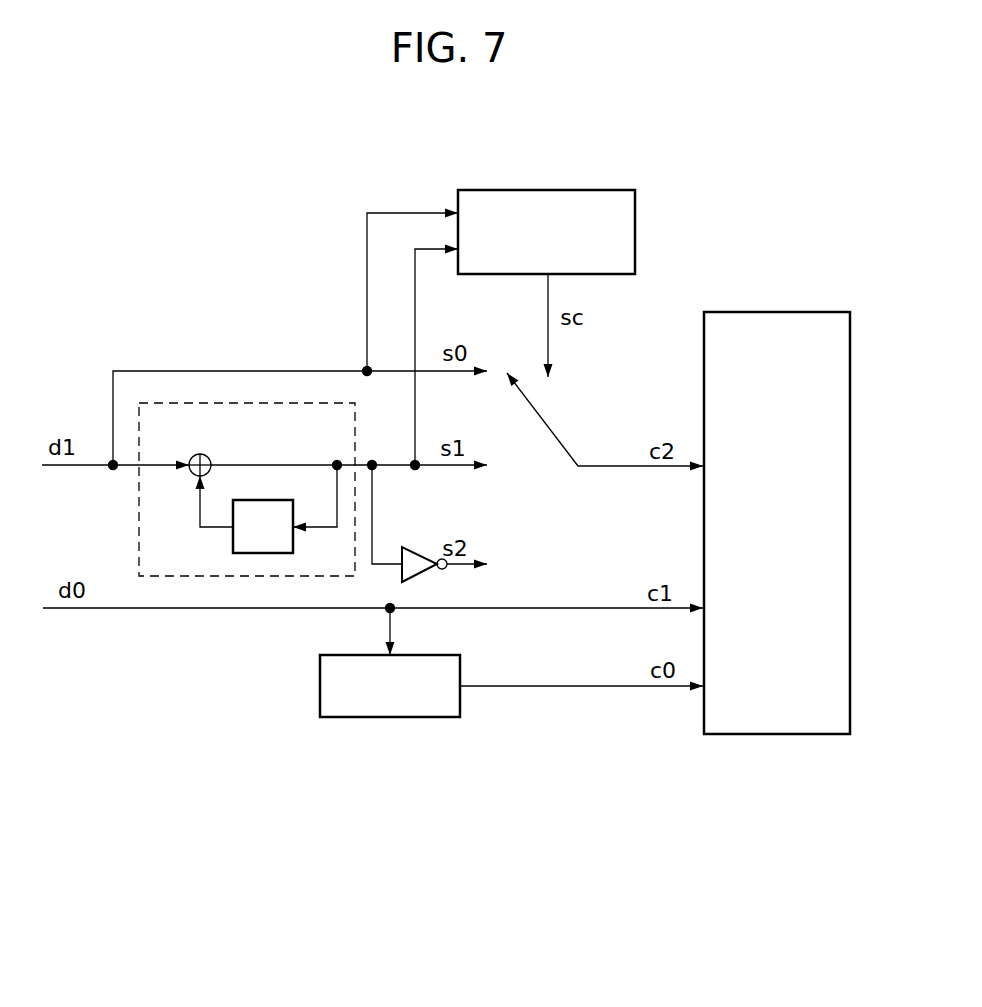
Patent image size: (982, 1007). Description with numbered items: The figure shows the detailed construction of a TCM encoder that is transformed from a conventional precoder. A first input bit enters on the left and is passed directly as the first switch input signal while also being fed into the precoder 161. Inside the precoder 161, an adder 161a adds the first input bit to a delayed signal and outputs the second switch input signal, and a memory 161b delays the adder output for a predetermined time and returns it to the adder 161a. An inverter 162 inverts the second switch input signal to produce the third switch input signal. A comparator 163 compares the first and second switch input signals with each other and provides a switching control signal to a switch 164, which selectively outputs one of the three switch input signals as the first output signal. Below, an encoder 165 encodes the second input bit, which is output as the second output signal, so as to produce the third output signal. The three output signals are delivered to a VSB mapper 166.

The precoder 161 is at (240, 401).
The adder 161a is at (211, 461).
The memory 161b is at (240, 537).
The inverter 162 is at (409, 554).
The comparator 163 is at (550, 201).
The switch 164 is at (554, 432).
The encoder 165 is at (392, 706).
The VSB mapper 166 is at (780, 722).